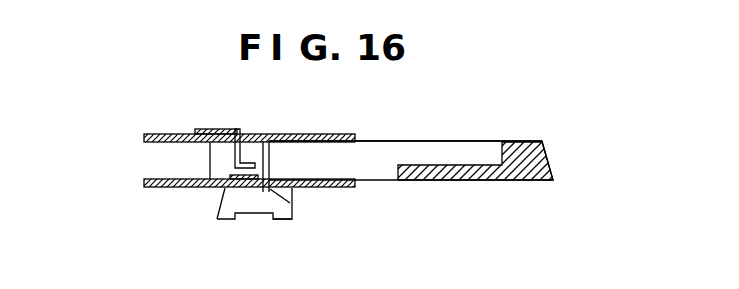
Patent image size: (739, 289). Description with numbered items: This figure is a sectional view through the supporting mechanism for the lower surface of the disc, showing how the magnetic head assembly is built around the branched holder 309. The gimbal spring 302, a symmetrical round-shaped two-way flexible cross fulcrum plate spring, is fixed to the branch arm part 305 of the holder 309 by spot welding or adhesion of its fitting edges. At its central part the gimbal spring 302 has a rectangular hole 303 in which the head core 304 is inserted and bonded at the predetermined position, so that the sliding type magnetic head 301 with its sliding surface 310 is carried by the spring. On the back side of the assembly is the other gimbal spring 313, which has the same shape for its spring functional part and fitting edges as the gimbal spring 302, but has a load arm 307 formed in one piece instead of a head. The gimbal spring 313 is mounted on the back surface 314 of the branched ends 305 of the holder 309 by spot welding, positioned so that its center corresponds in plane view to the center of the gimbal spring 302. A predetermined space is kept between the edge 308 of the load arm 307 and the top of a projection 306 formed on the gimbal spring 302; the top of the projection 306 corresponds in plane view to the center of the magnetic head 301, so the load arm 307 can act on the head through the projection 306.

The sliding type magnetic head 301 is at (238, 196).
The gimbal spring 302 is at (148, 188).
The rectangular hole 303 is at (291, 203).
The head core 304 is at (271, 165).
The branch arm part 305 is at (222, 163).
The projection 306 is at (221, 197).
The load arm 307 is at (240, 130).
The edge of the load arm 308 is at (218, 172).
The branched holder 309 is at (523, 142).
The sliding surface 310 is at (280, 224).
The gimbal spring 313 is at (150, 133).
The back surface 314 is at (367, 134).